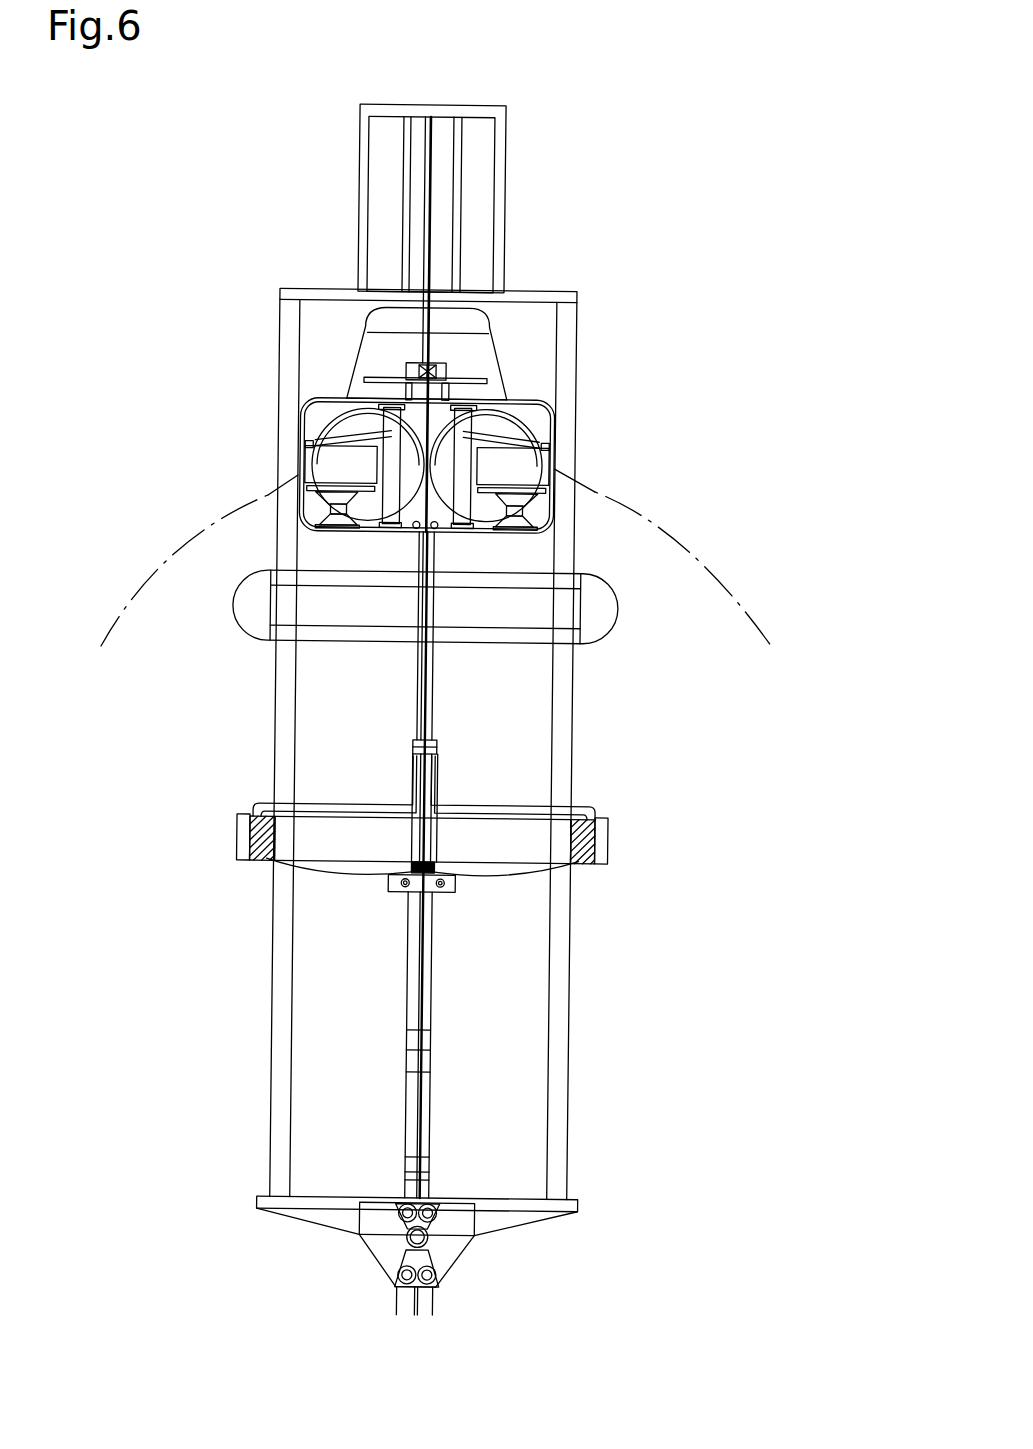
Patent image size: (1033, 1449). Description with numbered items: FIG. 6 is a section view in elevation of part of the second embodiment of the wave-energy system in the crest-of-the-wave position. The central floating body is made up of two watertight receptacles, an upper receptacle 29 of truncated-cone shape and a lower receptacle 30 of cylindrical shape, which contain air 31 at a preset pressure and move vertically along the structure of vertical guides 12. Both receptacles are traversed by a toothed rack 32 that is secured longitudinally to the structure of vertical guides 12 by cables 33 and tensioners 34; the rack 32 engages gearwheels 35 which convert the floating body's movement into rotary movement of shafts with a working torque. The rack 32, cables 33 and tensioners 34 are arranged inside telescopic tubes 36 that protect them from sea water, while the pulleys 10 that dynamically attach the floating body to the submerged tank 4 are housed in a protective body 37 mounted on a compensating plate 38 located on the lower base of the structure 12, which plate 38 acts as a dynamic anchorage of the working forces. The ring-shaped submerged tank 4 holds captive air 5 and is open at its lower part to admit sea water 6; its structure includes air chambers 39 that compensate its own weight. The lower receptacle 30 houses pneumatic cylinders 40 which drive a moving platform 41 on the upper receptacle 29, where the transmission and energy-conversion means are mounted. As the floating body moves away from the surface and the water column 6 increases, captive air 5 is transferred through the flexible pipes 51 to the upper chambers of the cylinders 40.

The submerged tank 4 is at (228, 833).
The captive air 5 is at (533, 468).
The sea water 6 is at (262, 857).
The pulleys 10 is at (427, 1212).
The structure of vertical guides 12 is at (572, 725).
The upper receptacle 29 is at (322, 362).
The lower receptacle 30 is at (287, 516).
The air 31 is at (319, 415).
The toothed rack 32 is at (490, 383).
The cables 33 is at (412, 318).
The tensioners 34 is at (430, 355).
The gearwheels 35 is at (383, 377).
The telescopic tubes 36 is at (460, 200).
The body 37 is at (428, 1242).
The base plate 38 is at (322, 1202).
The air chambers 39 is at (245, 852).
The pneumatic cylinders 40 is at (313, 460).
The moving platform 41 is at (417, 367).
The flexible pipes 51 is at (530, 530).